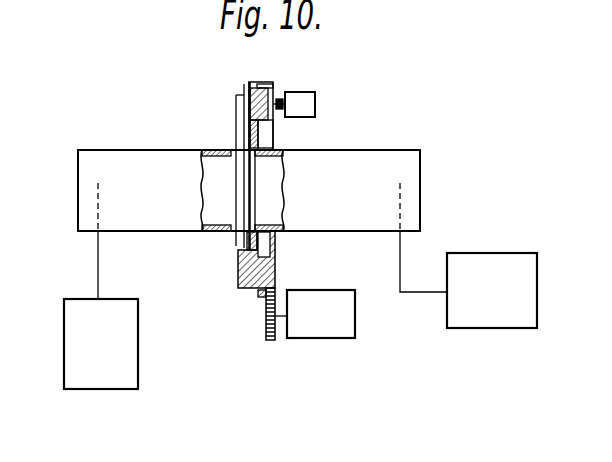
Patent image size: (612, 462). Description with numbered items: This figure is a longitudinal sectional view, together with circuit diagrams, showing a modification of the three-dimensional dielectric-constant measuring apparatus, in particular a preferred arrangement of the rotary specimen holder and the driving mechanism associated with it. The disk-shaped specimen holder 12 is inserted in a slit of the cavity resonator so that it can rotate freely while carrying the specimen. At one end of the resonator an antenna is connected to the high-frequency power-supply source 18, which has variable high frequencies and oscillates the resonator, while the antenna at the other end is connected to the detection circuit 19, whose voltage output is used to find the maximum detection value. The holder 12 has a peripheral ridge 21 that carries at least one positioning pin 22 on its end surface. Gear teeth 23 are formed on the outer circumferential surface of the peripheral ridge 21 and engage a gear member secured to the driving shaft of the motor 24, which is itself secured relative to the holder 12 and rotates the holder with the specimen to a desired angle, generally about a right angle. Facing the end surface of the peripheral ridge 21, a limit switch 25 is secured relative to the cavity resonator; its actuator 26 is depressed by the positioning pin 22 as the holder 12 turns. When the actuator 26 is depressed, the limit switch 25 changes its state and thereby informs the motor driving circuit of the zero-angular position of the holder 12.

The specimen holder 12 is at (233, 201).
The high-frequency power-supply source 18 is at (108, 353).
The detection circuit 19 is at (502, 303).
The peripheral ridge 21 is at (276, 272).
The positioning pin 22 is at (276, 97).
The gear teeth 23 is at (273, 82).
The motor 24 is at (330, 330).
The limit switch 25 is at (315, 101).
The actuator 26 is at (281, 109).